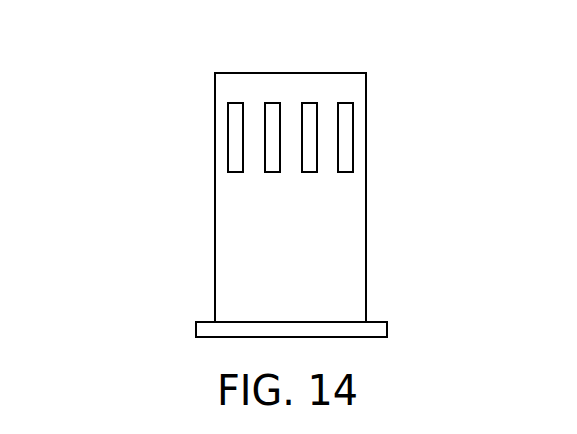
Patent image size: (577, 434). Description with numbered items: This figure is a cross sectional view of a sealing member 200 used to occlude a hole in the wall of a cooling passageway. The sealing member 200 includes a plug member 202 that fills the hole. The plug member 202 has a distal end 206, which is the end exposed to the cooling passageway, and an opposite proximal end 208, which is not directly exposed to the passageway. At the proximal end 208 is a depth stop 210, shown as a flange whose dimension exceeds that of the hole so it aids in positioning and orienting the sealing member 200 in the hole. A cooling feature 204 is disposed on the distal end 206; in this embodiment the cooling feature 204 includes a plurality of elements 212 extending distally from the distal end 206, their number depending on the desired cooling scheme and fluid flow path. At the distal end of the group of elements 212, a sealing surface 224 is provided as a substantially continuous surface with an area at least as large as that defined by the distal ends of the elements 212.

The sealing member 200 is at (166, 317).
The plug member 202 is at (314, 273).
The cooling feature 204 is at (390, 116).
The distal end 206 is at (392, 159).
The proximal end 208 is at (412, 332).
The depth stop 210 is at (392, 298).
The element 212 is at (225, 133).
The sealing surface 224 is at (295, 92).